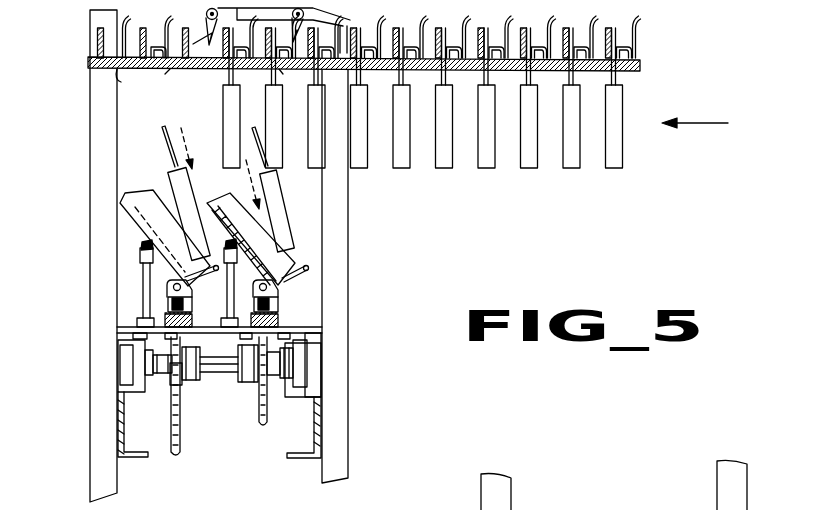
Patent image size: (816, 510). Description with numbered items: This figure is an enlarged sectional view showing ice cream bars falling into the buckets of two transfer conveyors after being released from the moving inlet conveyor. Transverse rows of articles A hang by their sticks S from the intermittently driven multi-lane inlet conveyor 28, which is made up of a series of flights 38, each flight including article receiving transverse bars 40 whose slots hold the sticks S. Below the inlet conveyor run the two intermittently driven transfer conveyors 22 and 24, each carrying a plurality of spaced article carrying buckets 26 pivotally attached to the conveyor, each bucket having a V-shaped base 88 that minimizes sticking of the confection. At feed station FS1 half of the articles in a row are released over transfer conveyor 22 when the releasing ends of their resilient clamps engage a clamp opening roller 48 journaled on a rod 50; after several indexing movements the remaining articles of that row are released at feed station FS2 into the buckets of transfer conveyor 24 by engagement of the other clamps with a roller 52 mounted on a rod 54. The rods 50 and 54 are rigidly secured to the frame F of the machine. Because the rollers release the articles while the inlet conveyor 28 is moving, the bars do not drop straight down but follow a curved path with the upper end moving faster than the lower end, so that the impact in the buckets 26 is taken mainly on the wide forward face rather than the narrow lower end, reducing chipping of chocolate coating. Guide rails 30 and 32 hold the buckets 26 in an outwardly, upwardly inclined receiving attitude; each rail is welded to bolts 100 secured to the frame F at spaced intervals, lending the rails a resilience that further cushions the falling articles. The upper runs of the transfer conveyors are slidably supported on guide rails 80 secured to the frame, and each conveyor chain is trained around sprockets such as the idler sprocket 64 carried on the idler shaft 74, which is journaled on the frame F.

The transfer conveyor 22 is at (286, 305).
The transfer conveyor 24 is at (158, 303).
The article carrying bucket 26 is at (167, 212).
The inlet conveyor 28 is at (652, 60).
The guide rail 30 is at (228, 241).
The guide rail 32 is at (141, 240).
The flight 38 is at (547, 48).
The transverse bar 40 is at (118, 70).
The clamp opening roller 48 is at (347, 23).
The rod 50 is at (280, 69).
The roller 52 is at (205, 14).
The rod 54 is at (171, 70).
The idler sprocket 64 is at (259, 419).
The idler shaft 74 is at (221, 378).
The guide rail 80 is at (163, 314).
The V-shaped base 88 is at (280, 244).
The bolt 100 is at (140, 268).
The article A is at (172, 170).
The stick S is at (228, 74).
The frame F is at (116, 437).
The feed station FS1 is at (209, 142).
The feed station FS2 is at (126, 158).